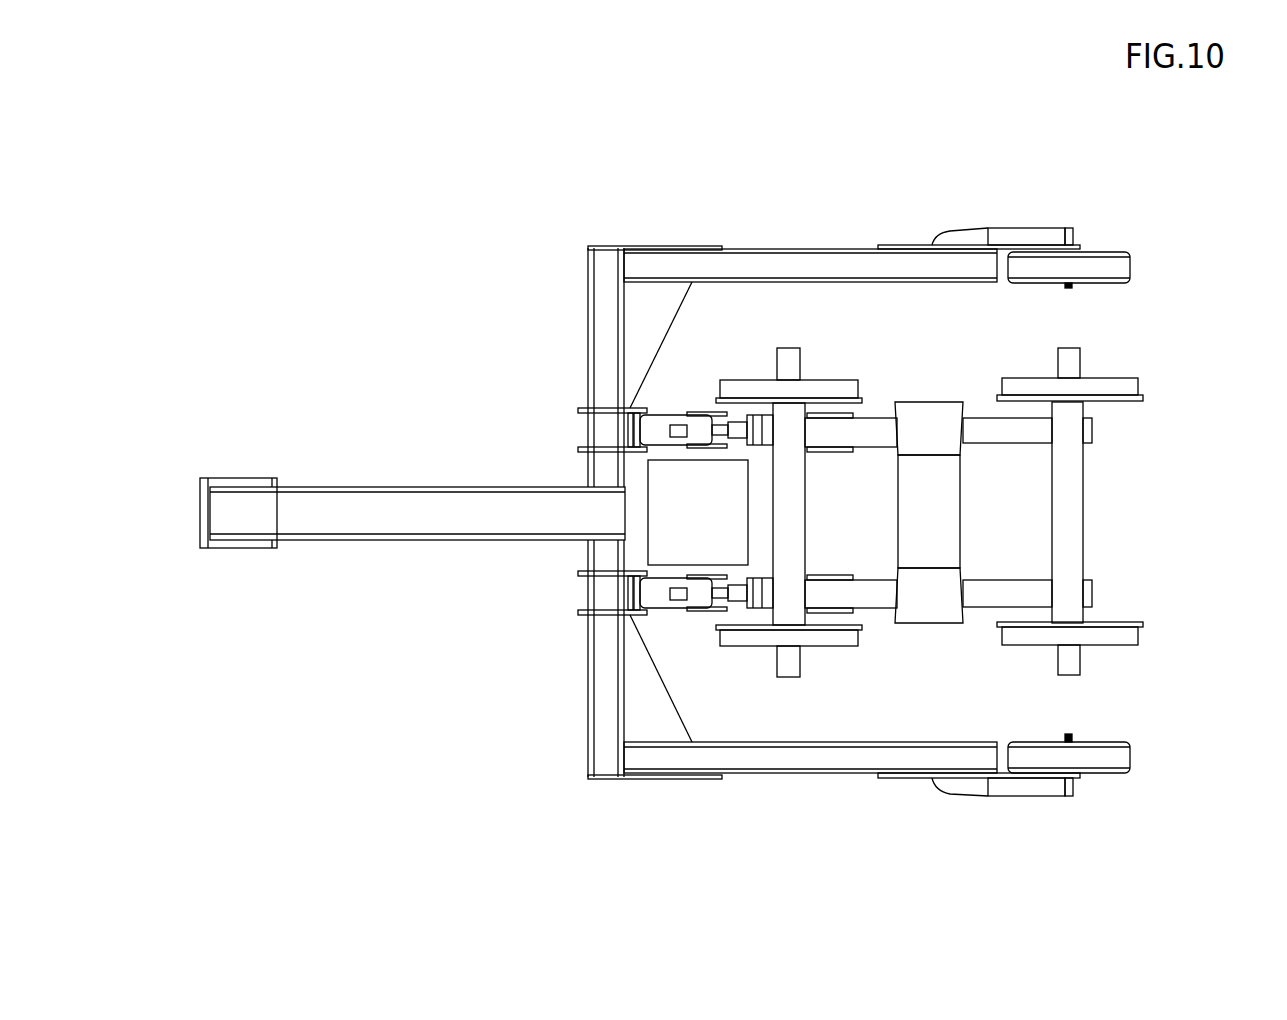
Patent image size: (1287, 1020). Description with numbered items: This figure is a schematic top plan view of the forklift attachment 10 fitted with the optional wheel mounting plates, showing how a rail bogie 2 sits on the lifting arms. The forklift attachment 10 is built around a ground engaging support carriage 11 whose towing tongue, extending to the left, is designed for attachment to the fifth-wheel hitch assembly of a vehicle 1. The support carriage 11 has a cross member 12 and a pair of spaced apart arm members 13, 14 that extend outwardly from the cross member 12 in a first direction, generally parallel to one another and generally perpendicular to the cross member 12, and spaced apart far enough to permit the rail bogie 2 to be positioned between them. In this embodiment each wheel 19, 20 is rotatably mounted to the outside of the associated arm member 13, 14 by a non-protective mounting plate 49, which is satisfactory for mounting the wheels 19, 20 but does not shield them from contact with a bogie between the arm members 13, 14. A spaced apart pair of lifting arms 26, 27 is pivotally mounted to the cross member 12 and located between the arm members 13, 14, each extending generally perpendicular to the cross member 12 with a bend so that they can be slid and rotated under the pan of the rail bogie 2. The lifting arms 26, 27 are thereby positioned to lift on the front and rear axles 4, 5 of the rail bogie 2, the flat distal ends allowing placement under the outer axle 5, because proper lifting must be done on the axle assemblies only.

The forklift attachment 10 is at (737, 501).
The ground engaging support carriage 11 is at (856, 501).
The cross member 12 is at (581, 512).
The arm member 13 is at (810, 791).
The arm member 14 is at (810, 207).
The non-protective mounting plate 49 is at (979, 513).
The wheel 20 is at (1135, 238).
The wheel 19 is at (1140, 735).
The vehicle 1 is at (412, 569).
The rail bogie 2 is at (960, 507).
The axle 4 is at (835, 344).
The axle 5 is at (1114, 343).
The lifting arm 27 is at (942, 399).
The lifting arm 26 is at (940, 636).